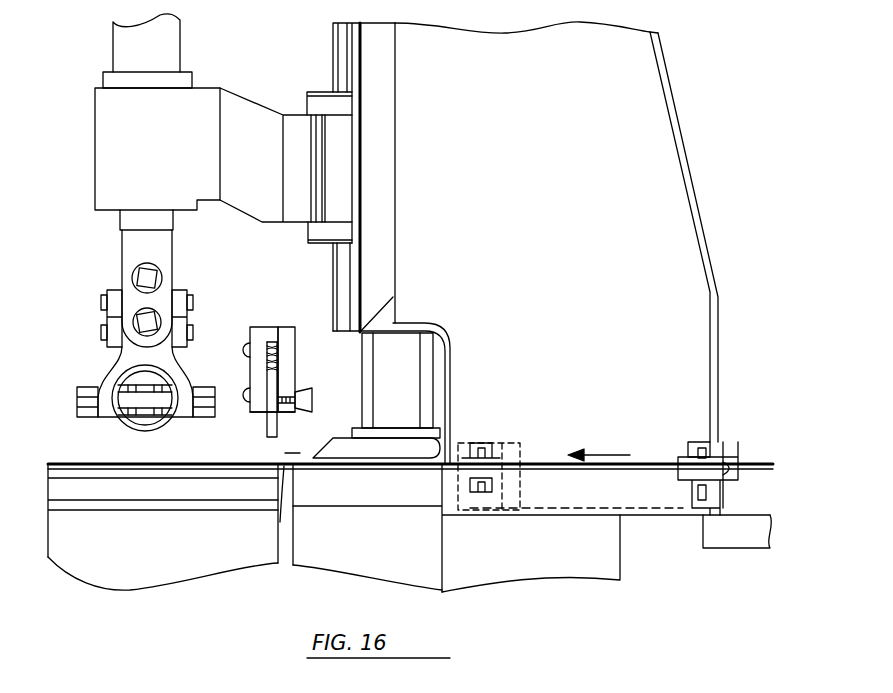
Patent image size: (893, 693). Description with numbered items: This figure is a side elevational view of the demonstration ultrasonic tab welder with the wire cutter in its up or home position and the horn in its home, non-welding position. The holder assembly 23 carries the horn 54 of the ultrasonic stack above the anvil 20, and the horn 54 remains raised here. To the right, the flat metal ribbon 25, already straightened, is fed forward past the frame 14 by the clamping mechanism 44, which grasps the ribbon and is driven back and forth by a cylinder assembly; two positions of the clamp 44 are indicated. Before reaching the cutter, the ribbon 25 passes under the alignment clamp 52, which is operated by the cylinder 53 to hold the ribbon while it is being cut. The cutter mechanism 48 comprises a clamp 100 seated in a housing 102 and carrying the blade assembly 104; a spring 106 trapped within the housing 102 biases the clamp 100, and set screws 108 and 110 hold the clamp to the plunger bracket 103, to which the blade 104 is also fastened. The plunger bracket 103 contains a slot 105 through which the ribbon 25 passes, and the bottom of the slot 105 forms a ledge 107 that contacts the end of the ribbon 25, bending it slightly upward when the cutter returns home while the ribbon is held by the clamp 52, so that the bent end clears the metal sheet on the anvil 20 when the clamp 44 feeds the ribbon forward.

The frame 14 is at (627, 107).
The anvil 20 is at (405, 527).
The holder assembly 23 is at (115, 255).
The flat metal ribbon 25 is at (148, 462).
The clamping mechanism 44 is at (488, 443).
The cutter mechanism 48 is at (282, 399).
The alignment clamp 52 is at (360, 450).
The cylinder 53 is at (400, 373).
The horn 54 is at (127, 407).
The clamp 100 is at (270, 435).
The housing 102 is at (265, 328).
The plunger bracket 103 is at (280, 332).
The blade assembly 104 is at (300, 430).
The slot 105 is at (285, 453).
The spring 106 is at (270, 343).
The ledge 107 is at (254, 503).
The set screw 108 is at (247, 350).
The set screw 110 is at (247, 395).